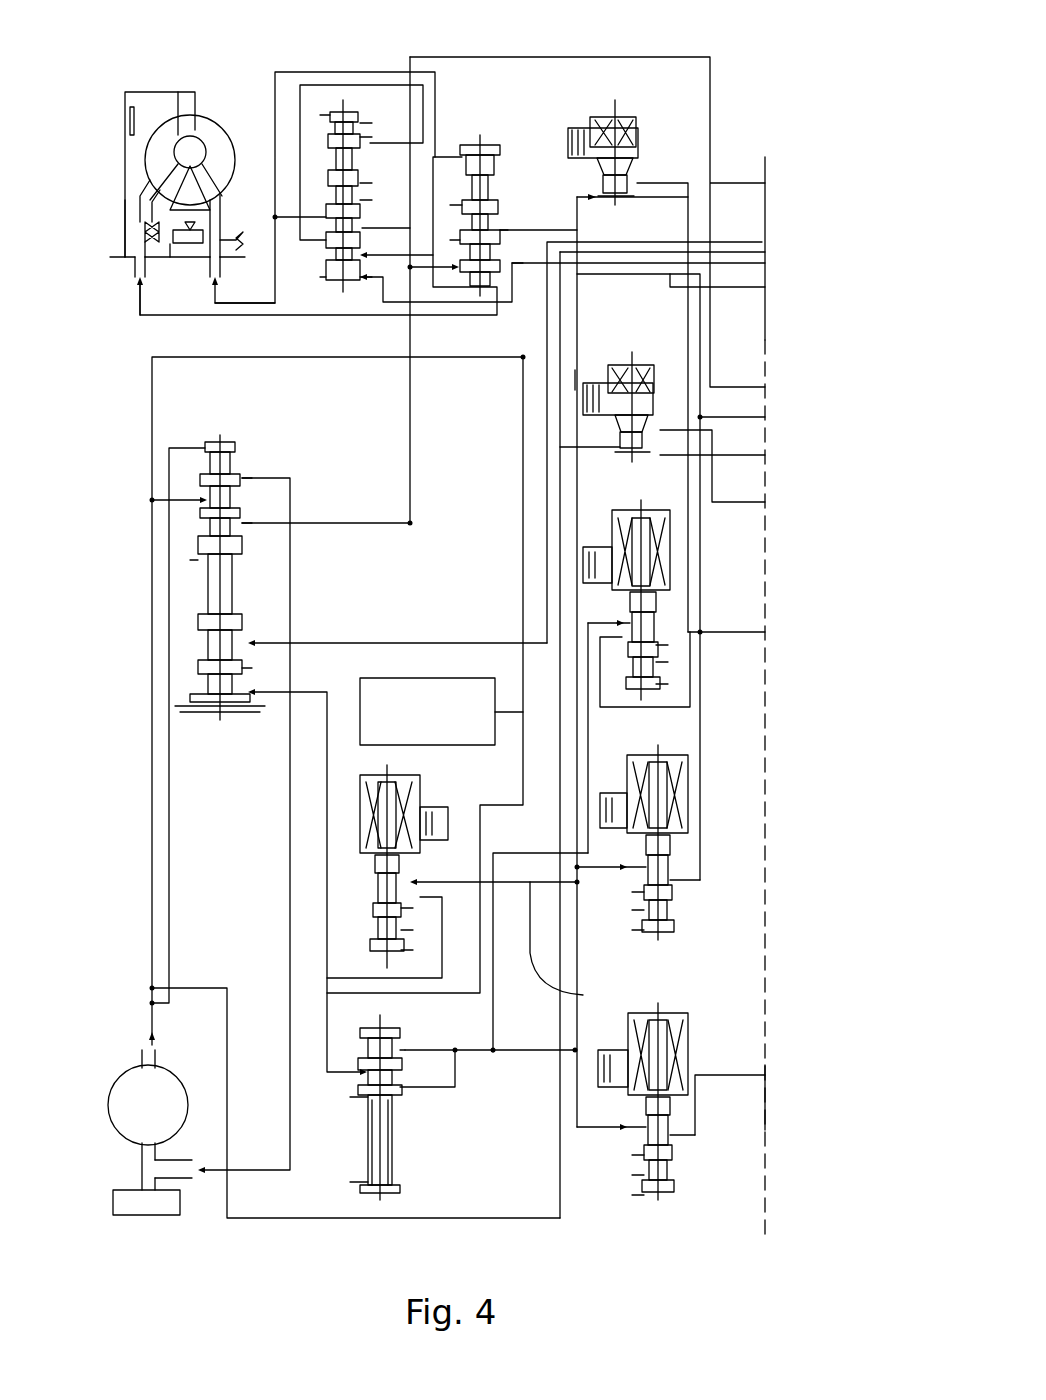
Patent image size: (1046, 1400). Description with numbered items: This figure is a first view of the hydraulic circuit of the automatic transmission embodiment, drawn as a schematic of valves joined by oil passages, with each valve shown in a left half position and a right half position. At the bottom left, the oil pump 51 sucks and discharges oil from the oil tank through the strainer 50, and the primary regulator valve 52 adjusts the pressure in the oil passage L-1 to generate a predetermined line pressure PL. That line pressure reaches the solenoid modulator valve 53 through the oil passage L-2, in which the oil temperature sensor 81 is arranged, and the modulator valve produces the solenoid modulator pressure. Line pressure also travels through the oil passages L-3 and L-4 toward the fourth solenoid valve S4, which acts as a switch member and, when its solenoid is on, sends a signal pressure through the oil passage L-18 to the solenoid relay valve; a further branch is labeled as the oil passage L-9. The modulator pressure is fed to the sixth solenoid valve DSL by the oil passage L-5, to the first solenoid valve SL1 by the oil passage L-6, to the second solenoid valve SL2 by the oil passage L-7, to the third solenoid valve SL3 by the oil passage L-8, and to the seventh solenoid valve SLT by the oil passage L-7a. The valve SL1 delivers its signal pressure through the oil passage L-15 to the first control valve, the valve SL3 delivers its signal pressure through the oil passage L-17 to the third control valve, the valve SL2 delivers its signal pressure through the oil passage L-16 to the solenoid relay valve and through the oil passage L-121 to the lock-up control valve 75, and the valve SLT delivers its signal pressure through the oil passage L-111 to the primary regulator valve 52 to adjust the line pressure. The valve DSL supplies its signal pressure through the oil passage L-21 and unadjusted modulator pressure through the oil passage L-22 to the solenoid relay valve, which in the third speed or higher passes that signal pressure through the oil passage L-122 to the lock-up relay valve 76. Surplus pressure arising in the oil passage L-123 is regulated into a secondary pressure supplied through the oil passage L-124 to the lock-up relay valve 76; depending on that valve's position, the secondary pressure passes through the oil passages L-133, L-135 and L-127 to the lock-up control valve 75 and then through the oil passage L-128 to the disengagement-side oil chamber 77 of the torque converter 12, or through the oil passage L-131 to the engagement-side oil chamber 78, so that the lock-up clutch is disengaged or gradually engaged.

The torque converter 12 is at (212, 88).
The disengagement-side oil chamber 77 is at (130, 223).
The engagement-side oil chamber 78 is at (167, 250).
The lock-up relay valve 76 is at (348, 110).
The lock-up control valve 75 is at (490, 147).
The primary regulator valve 52 is at (232, 442).
The solenoid modulator valve 53 is at (393, 1030).
The oil pump 51 is at (132, 1066).
The strainer 50 is at (182, 1210).
The oil temperature sensor 81 is at (408, 678).
The sixth solenoid valve DSL is at (636, 117).
The fourth solenoid valve S4 is at (648, 357).
The first solenoid valve SL1 is at (634, 507).
The second solenoid valve SL2 is at (652, 755).
The third solenoid valve SL3 is at (648, 1015).
The seventh solenoid valve SLT is at (418, 778).
The oil passage L-1 is at (150, 378).
The oil passage L-2 is at (323, 1082).
The oil passage L-3 is at (343, 1220).
The oil passage L-4 is at (757, 292).
The oil passage L-5 is at (575, 370).
The oil passage L-6 is at (588, 623).
The oil passage L-7 is at (594, 870).
The oil passage L-7a is at (577, 945).
The oil passage L-8 is at (594, 1130).
The oil passage L-9 is at (765, 242).
The oil passage L-15 is at (731, 640).
The oil passage L-16 is at (728, 416).
The oil passage L-17 is at (723, 1078).
The oil passage L-18 is at (754, 506).
The oil passage L-21 is at (640, 183).
The oil passage L-22 is at (667, 203).
The oil passage L-111 is at (325, 770).
The oil passage L-121 is at (507, 230).
The oil passage L-122 is at (660, 276).
The oil passage L-123 is at (343, 525).
The oil passage L-124 is at (410, 420).
The oil passage L-127 is at (362, 85).
The oil passage L-128 is at (140, 314).
The oil passage L-131 is at (278, 303).
The oil passage L-133 is at (414, 316).
The oil passage L-135 is at (400, 226).